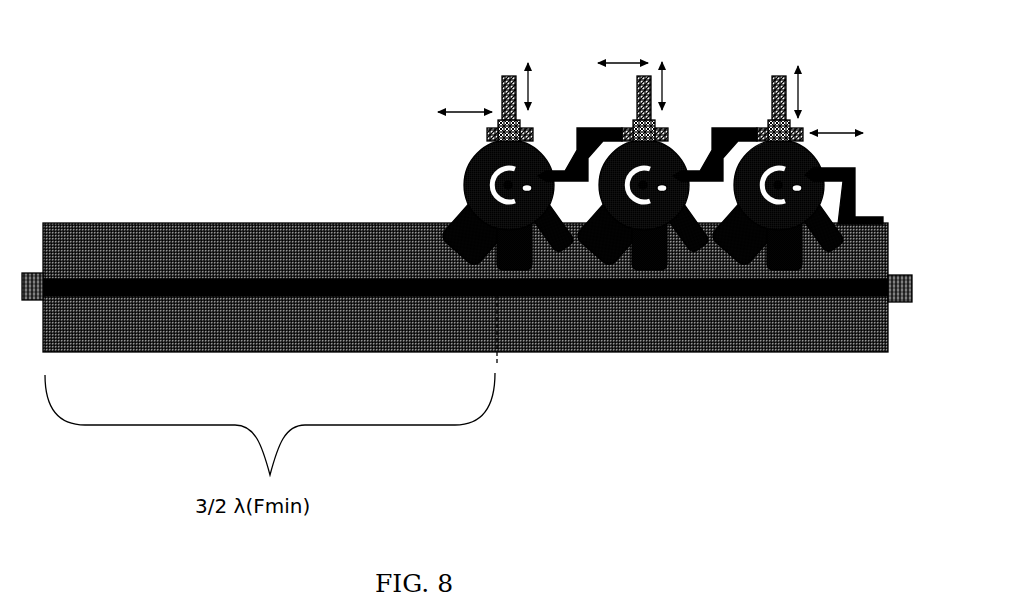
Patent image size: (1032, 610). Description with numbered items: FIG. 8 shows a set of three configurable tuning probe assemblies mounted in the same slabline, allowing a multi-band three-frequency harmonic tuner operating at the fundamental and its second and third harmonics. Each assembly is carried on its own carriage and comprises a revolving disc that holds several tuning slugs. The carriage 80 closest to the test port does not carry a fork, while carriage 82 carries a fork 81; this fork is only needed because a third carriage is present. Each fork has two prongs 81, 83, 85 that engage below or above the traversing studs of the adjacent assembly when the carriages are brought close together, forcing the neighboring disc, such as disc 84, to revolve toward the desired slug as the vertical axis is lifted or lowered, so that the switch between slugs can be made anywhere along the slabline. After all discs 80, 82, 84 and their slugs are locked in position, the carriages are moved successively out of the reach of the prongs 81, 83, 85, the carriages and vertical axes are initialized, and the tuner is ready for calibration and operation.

The carriage 80 is at (464, 191).
The fork 81 is at (621, 128).
The carriage 82 is at (686, 136).
The prongs 83 is at (749, 128).
The disc 84 is at (822, 161).
The prongs 85 is at (861, 201).